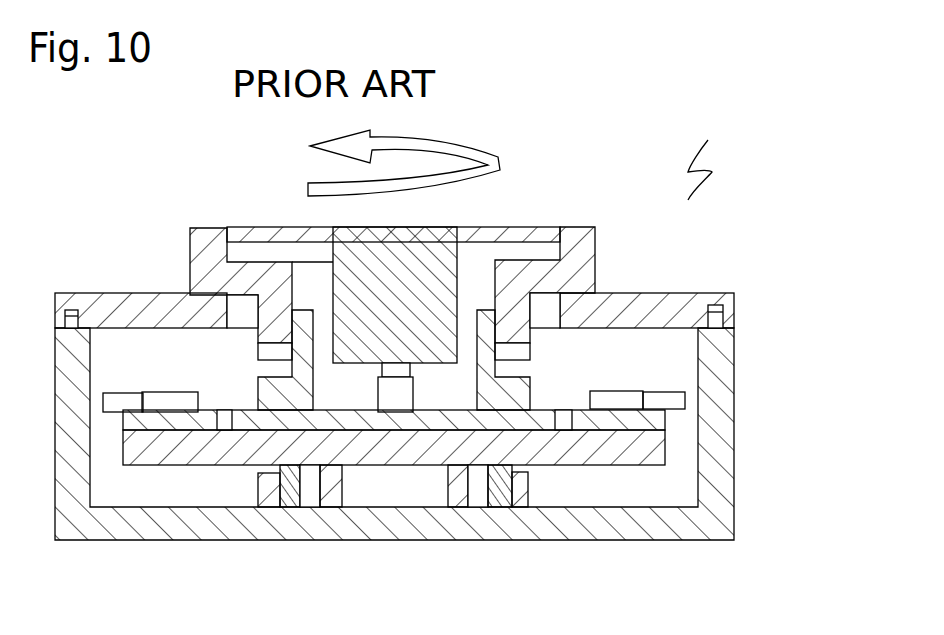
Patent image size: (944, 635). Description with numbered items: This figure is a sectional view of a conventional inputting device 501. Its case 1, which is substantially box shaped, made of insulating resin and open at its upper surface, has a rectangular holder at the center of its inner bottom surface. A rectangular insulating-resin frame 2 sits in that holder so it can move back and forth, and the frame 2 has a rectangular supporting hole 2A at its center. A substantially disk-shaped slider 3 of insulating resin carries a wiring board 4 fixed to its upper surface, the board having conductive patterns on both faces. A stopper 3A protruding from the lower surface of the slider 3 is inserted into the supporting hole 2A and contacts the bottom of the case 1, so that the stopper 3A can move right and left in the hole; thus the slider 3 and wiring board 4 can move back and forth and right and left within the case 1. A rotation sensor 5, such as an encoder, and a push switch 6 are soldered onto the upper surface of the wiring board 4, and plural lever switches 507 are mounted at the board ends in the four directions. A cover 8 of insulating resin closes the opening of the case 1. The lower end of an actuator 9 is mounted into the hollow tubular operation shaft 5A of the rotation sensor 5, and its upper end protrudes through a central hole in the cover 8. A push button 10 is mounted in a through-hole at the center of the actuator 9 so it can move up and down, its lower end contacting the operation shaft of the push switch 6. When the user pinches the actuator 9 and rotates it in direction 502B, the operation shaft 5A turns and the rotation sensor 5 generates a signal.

The case 1 is at (702, 528).
The frame 2 is at (292, 495).
The supporting hole 2A is at (312, 493).
The slider 3 is at (557, 452).
The stopper 3A is at (460, 490).
The wiring board 4 is at (600, 423).
The rotation sensor 5 is at (560, 295).
The operation shaft 5A is at (510, 397).
The push switch 6 is at (397, 397).
The cover 8 is at (120, 307).
The actuator 9 is at (207, 242).
The push button 10 is at (487, 237).
The inputting device 501 is at (709, 153).
The direction 502B is at (480, 162).
The lever switches 507 is at (620, 395).